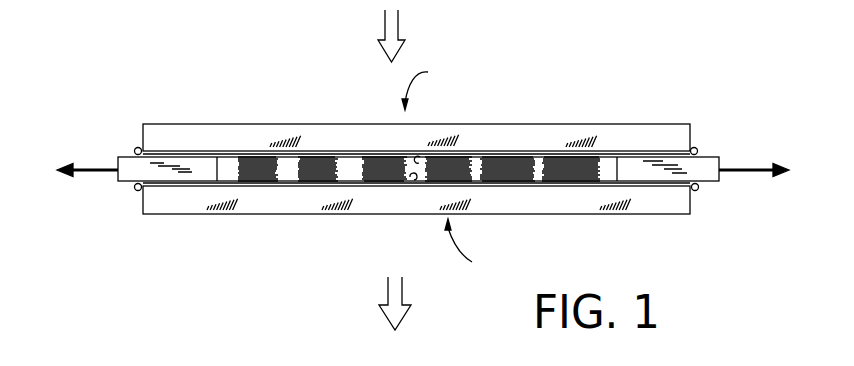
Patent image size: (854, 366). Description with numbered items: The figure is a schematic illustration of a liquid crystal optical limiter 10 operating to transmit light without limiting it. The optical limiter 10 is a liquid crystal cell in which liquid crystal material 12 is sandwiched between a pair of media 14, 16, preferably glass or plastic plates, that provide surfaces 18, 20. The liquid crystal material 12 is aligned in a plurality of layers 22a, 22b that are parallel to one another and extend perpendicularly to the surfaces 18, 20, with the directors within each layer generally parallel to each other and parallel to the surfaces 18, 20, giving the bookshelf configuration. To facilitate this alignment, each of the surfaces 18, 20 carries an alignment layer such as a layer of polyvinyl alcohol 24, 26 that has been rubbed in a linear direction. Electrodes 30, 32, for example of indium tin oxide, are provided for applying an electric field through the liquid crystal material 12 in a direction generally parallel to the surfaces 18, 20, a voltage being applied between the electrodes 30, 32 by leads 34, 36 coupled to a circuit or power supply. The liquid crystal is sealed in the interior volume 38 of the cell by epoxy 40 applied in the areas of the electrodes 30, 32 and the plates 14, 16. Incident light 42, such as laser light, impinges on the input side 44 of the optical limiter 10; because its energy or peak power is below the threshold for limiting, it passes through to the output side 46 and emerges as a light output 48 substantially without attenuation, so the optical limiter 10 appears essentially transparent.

The optical limiter 10 is at (181, 63).
The liquid crystal material 12 is at (250, 157).
The medium 14 is at (557, 130).
The medium 16 is at (668, 200).
The surface 18 is at (487, 157).
The surface 20 is at (560, 186).
The layer 22a is at (268, 157).
The layer 22b is at (335, 157).
The polyvinyl alcohol layer 24 is at (420, 157).
The polyvinyl alcohol layer 26 is at (410, 177).
The electrode 30 is at (125, 180).
The electrode 32 is at (711, 183).
The lead 34 is at (90, 166).
The lead 36 is at (746, 168).
The interior volume 38 is at (287, 170).
The epoxy 40 is at (138, 147).
The incident light 42 is at (398, 24).
The input side 44 is at (430, 88).
The output side 46 is at (472, 246).
The light output 48 is at (402, 292).